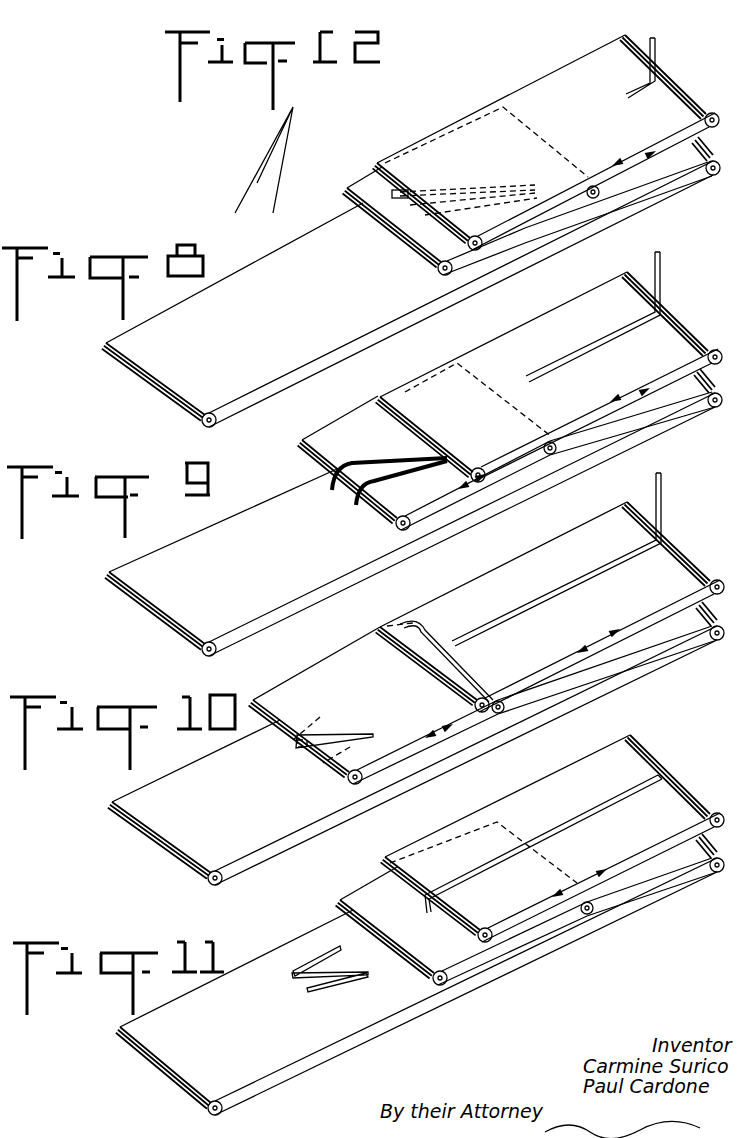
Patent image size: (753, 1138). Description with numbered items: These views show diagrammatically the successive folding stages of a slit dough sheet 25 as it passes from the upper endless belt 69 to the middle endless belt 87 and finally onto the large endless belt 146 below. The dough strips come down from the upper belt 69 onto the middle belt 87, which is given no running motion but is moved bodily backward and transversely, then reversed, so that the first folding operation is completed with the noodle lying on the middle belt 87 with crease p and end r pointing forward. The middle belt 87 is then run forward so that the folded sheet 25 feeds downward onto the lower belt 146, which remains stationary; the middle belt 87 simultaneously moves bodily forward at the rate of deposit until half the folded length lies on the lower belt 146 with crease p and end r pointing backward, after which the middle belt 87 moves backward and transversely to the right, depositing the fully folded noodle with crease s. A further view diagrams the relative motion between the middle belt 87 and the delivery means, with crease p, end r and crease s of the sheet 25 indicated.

In FIG. 12, the dough sheet 25 is at (258, 161).
In FIG. 8, the dough sheet 25 is at (658, 53).
In FIG. 9, the dough sheet 25 is at (663, 272).
In FIG. 10, the dough sheet 25 is at (663, 495).
In FIG. 11, the dough sheet 25 is at (632, 783).
In FIG. 8, the upper endless belt 69 is at (543, 80).
In FIG. 9, the upper endless belt 69 is at (543, 313).
In FIG. 10, the upper endless belt 69 is at (553, 542).
In FIG. 11, the upper endless belt 69 is at (547, 775).
In FIG. 8, the middle endless belt 87 is at (347, 198).
In FIG. 9, the middle endless belt 87 is at (340, 423).
In FIG. 10, the middle endless belt 87 is at (337, 658).
In FIG. 11, the middle endless belt 87 is at (360, 887).
In FIG. 8, the large endless belt 146 is at (272, 258).
In FIG. 9, the large endless belt 146 is at (268, 499).
In FIG. 10, the large endless belt 146 is at (190, 767).
In FIG. 11, the large endless belt 146 is at (290, 948).
In FIG. 12, the crease p is at (232, 223).
In FIG. 8, the crease p is at (366, 198).
In FIG. 9, the crease p is at (313, 495).
In FIG. 10, the crease p is at (345, 707).
In FIG. 11, the crease p is at (350, 943).
In FIG. 12, the end r is at (268, 221).
In FIG. 8, the end r is at (402, 222).
In FIG. 9, the end r is at (348, 513).
In FIG. 10, the end r is at (358, 753).
In FIG. 11, the end r is at (353, 960).
In FIG. 12, the crease s is at (302, 103).
In FIG. 8, the crease s is at (541, 183).
In FIG. 9, the crease s is at (468, 451).
In FIG. 10, the crease s is at (388, 733).
In FIG. 11, the crease s is at (380, 968).